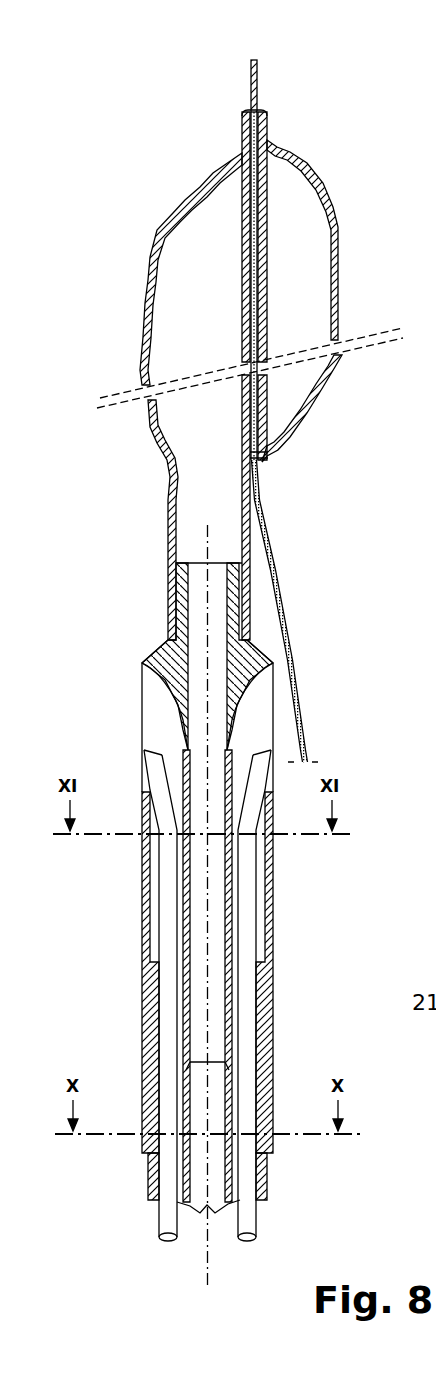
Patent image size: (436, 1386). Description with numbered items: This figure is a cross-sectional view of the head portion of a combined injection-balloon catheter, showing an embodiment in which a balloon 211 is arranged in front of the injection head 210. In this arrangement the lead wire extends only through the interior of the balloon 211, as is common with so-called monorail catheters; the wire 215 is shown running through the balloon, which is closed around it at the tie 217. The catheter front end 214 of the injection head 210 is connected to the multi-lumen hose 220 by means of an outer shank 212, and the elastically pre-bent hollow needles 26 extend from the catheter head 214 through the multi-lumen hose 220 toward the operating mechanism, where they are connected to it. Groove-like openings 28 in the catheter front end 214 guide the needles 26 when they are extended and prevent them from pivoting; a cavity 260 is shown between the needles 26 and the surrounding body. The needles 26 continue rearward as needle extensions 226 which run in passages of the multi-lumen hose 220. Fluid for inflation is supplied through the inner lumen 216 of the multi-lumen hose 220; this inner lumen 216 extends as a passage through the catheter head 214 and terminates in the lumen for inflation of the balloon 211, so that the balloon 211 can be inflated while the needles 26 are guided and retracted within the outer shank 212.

The guide wire 215 is at (257, 78).
The balloon 211 is at (338, 203).
The tie band 217 is at (260, 457).
The inner lumen 216 is at (200, 1202).
The injection head 210 is at (132, 608).
The catheter front end 214 is at (153, 650).
The groove-like openings 28 is at (150, 683).
The cavity 260 is at (267, 747).
The hollow needles 26 is at (168, 872).
The outer shank 212 is at (273, 882).
The multi-lumen hose 220 is at (270, 1187).
The needle extensions 226 is at (247, 1224).